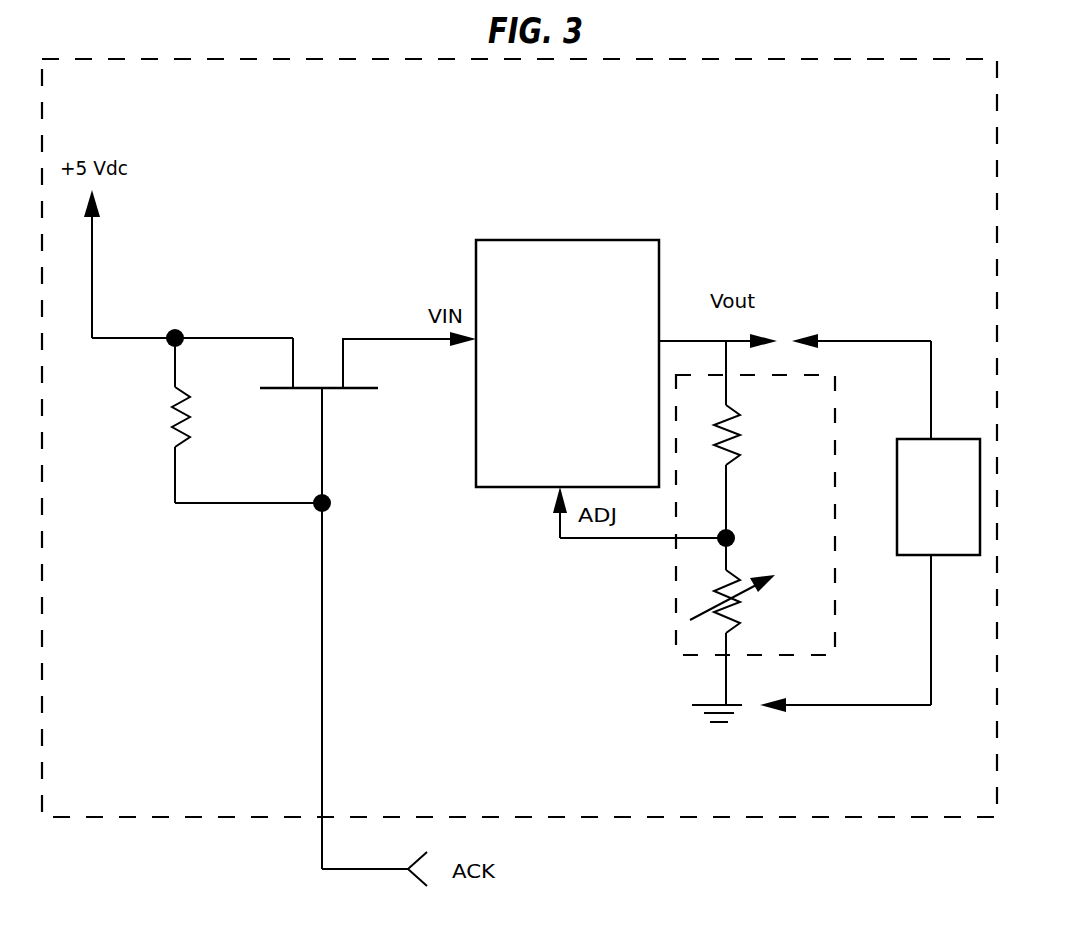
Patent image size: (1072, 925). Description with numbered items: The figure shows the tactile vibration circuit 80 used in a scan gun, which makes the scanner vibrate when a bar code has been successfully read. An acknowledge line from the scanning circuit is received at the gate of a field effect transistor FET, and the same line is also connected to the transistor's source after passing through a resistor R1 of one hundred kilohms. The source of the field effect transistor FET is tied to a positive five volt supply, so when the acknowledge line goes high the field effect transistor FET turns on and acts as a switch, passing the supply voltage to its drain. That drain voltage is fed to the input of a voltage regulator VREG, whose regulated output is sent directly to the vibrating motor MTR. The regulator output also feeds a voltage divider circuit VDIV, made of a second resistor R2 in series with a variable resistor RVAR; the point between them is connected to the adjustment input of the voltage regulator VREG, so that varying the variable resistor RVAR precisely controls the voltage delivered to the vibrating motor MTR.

The vibration circuit 80 is at (266, 55).
The resistor R1 is at (216, 420).
The field effect transistor FET is at (328, 339).
The voltage regulator VREG is at (608, 224).
The voltage divider circuit VDIV is at (796, 523).
The second resistor R2 is at (754, 439).
The variable resistor RVAR is at (756, 621).
The vibrating motor MTR is at (938, 497).